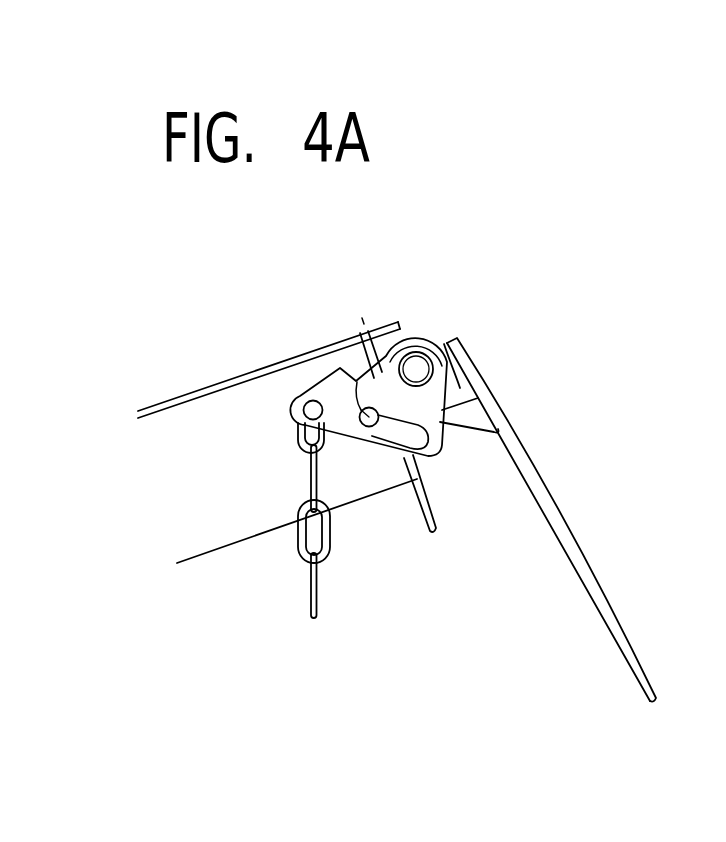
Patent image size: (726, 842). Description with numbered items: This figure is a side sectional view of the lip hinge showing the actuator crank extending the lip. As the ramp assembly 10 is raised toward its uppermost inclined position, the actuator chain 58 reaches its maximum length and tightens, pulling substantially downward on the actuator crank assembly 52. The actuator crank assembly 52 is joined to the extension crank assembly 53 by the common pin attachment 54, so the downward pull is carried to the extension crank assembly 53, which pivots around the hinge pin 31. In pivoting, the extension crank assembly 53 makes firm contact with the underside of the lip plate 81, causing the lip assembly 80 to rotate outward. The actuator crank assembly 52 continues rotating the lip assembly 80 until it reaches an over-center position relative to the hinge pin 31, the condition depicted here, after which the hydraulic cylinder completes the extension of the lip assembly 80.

The ramp assembly 10 is at (245, 374).
The hinge pin 31 is at (416, 369).
The actuator crank assembly 52 is at (380, 447).
The extension crank assembly 53 is at (462, 370).
The common pin attachment 54 is at (378, 350).
The actuator chain 58 is at (312, 565).
The lip assembly 80 is at (582, 545).
The lip plate 81 is at (522, 473).